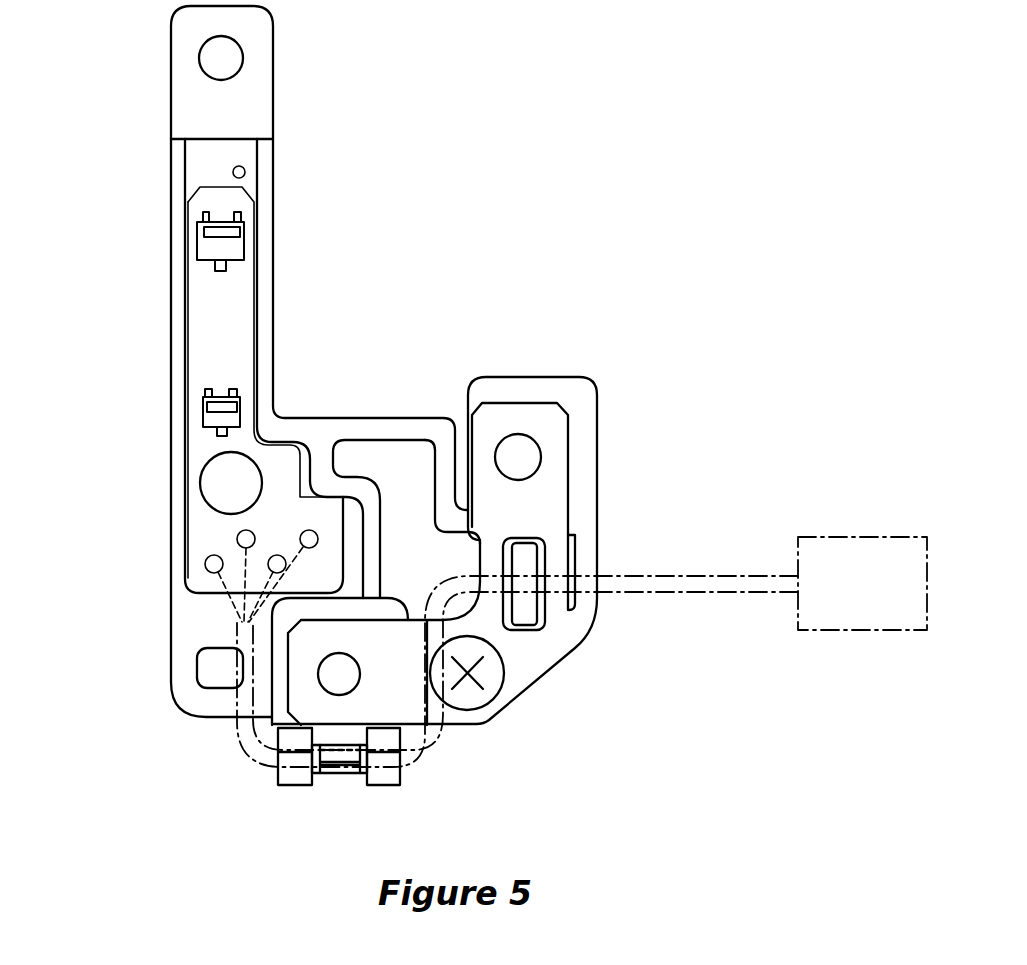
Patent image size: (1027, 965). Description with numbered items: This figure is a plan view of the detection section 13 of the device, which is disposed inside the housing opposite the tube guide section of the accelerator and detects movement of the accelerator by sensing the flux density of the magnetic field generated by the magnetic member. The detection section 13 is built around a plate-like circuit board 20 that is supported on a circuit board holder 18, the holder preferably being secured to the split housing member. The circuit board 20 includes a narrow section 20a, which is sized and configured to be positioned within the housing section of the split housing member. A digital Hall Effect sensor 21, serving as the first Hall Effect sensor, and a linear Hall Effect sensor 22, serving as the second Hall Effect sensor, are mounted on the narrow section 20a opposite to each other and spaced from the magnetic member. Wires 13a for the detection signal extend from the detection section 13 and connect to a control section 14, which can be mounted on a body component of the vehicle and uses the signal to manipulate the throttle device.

The detection section 13 is at (280, 185).
The wires 13a is at (662, 593).
The control section 14 is at (870, 631).
The circuit board holder 18 is at (170, 512).
The circuit board 20 is at (264, 326).
The narrow section 20a is at (202, 325).
The digital Hall Effect sensor 21 is at (197, 250).
The linear Hall Effect sensor 22 is at (203, 422).